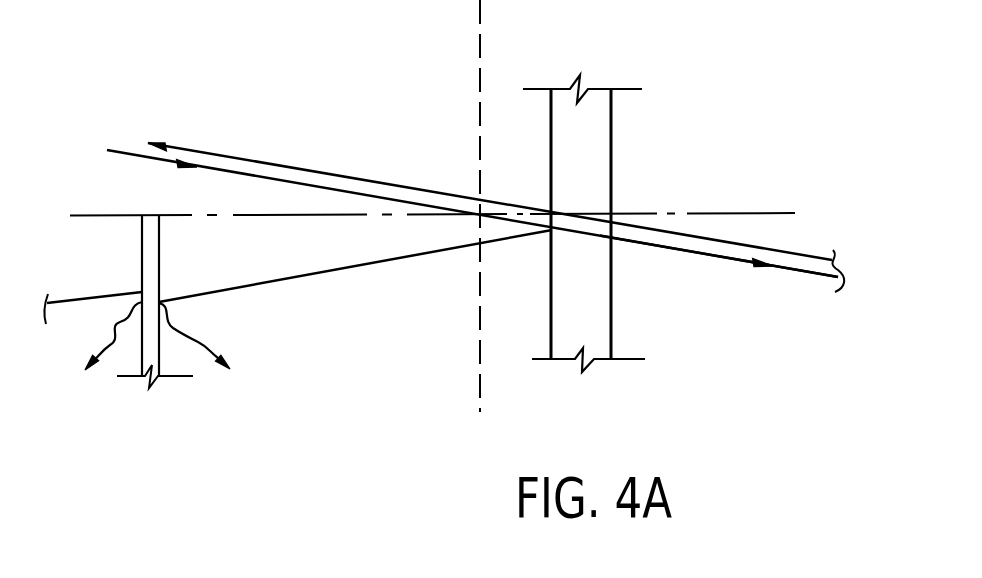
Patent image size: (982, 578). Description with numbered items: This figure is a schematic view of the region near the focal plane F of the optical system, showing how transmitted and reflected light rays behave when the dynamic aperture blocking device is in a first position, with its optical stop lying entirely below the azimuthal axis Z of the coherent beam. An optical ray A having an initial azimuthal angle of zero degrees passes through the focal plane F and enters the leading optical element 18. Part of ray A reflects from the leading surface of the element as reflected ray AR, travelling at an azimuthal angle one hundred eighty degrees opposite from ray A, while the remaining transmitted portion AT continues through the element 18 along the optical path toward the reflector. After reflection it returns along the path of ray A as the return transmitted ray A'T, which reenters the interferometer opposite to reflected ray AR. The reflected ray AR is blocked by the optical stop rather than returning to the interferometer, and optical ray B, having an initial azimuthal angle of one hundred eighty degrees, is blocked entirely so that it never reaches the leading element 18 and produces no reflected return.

The azimuthal axis Z is at (760, 213).
The focal plane F is at (480, 393).
The leading optical element 18 is at (600, 349).
The optical ray B is at (93, 295).
The reflected ray AR is at (323, 273).
The optical ray A is at (465, 213).
The transmitted portion AT is at (793, 273).
The return transmitted ray A'T is at (490, 185).